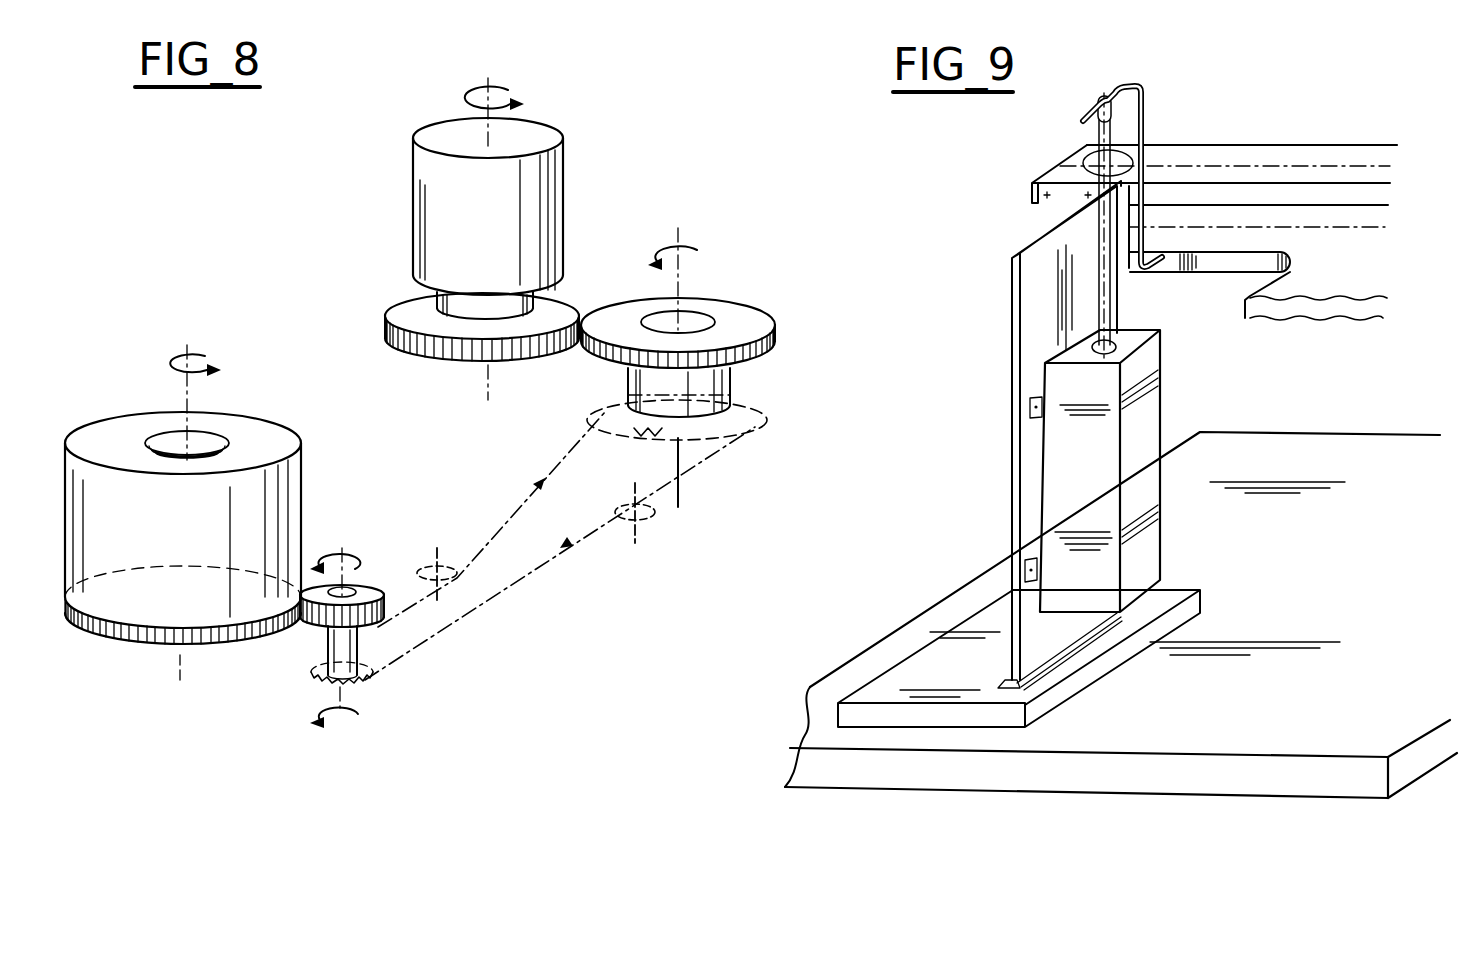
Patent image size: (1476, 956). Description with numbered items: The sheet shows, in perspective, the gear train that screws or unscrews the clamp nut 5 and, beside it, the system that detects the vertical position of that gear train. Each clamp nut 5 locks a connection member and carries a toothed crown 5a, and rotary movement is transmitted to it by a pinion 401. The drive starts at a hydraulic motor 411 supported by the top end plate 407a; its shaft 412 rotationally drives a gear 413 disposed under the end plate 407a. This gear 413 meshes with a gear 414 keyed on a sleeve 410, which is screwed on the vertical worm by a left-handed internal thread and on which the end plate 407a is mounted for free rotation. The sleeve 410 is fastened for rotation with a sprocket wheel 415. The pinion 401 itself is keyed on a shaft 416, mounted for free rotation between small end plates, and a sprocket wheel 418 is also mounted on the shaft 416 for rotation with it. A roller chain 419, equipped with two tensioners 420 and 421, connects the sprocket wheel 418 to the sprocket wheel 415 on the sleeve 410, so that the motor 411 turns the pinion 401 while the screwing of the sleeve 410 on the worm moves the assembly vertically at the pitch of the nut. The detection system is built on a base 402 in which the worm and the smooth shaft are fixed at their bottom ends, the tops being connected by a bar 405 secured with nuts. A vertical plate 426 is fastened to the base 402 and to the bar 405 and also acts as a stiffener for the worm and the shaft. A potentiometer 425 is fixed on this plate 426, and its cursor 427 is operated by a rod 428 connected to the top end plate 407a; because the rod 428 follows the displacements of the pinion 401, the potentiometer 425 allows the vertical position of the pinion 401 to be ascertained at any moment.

In FIG. 8, the clamp nut 5 is at (183, 523).
In FIG. 8, the toothed crown 5a is at (150, 636).
In FIG. 8, the pinion 401 is at (320, 618).
In FIG. 8, the sleeve 410 is at (725, 380).
In FIG. 8, the hydraulic motor 411 is at (547, 188).
In FIG. 8, the shaft 412 is at (458, 308).
In FIG. 8, the gear 413 is at (440, 363).
In FIG. 8, the gear 414 is at (724, 322).
In FIG. 8, the sprocket wheel 415 is at (757, 425).
In FIG. 8, the shaft 416 is at (300, 680).
In FIG. 8, the sprocket wheel 418 is at (372, 675).
In FIG. 8, the roller chain 419 is at (538, 562).
In FIG. 8, the tensioner 420 is at (655, 515).
In FIG. 8, the tensioner 421 is at (440, 580).
In FIG. 9, the base 402 is at (1117, 733).
In FIG. 9, the bar 405 is at (1277, 157).
In FIG. 9, the top end plate 407a is at (1245, 242).
In FIG. 9, the potentiometer 425 is at (1147, 375).
In FIG. 9, the vertical plate 426 is at (1040, 300).
In FIG. 9, the cursor 427 is at (1097, 250).
In FIG. 9, the rod 428 is at (1140, 125).